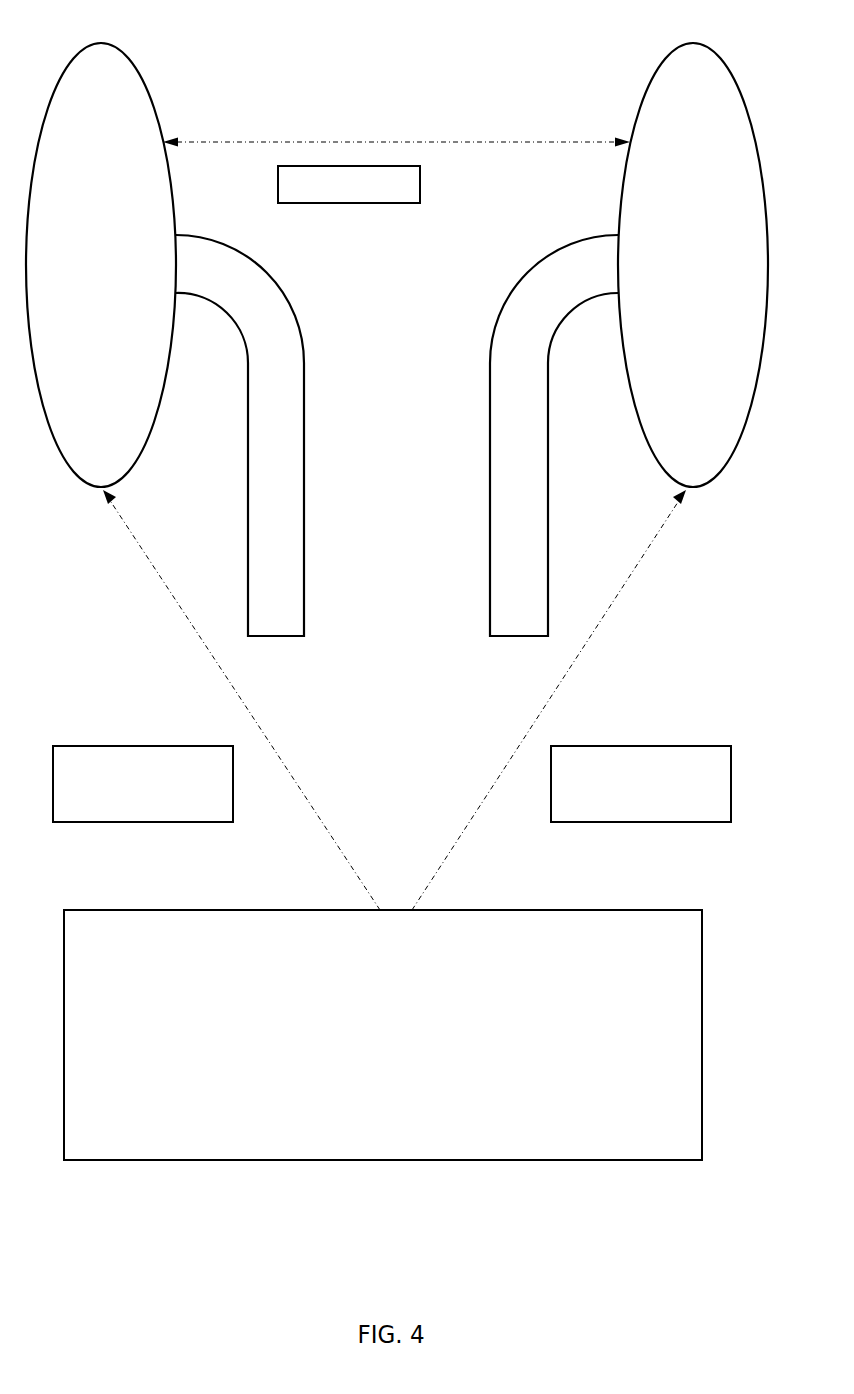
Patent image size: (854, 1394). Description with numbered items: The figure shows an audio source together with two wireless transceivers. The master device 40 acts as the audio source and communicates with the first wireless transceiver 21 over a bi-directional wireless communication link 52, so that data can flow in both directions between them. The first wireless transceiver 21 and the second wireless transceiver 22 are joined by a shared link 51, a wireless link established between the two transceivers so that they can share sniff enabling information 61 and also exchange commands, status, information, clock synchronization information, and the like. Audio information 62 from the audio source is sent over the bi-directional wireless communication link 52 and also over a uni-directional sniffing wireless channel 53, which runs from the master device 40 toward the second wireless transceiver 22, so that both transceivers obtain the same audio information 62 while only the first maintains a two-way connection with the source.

The first wireless transceiver 21 is at (87, 279).
The second wireless transceiver 22 is at (679, 279).
The master device 40 is at (368, 1047).
The shared link 51 is at (412, 140).
The bi-directional wireless communication link 52 is at (198, 627).
The uni-directional sniffing wireless channel 53 is at (615, 593).
The sniff enabling information 61 is at (335, 198).
The audio information 62 is at (199, 814).